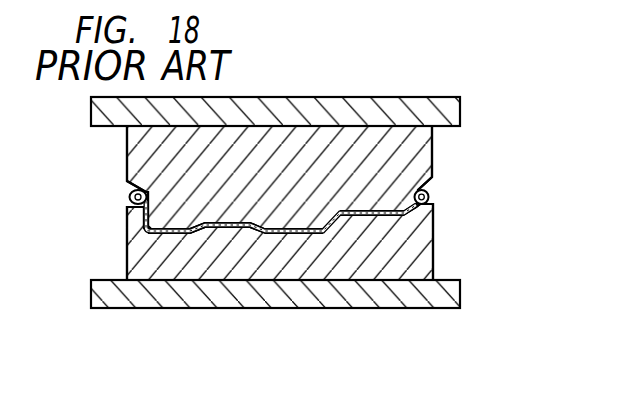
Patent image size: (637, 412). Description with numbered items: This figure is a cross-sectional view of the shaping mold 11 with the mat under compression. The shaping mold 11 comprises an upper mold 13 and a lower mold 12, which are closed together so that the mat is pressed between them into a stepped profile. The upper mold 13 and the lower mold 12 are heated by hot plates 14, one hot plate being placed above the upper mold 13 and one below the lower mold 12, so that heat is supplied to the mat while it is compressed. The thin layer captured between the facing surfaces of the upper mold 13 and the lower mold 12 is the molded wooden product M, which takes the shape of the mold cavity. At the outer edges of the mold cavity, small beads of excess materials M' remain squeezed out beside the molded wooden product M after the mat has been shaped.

The shaping mold 11 is at (496, 176).
The lower mold 12 is at (425, 237).
The upper mold 13 is at (420, 171).
The hot plates 14 is at (450, 108).
The molded wooden product M is at (287, 269).
The excess materials M' is at (107, 194).